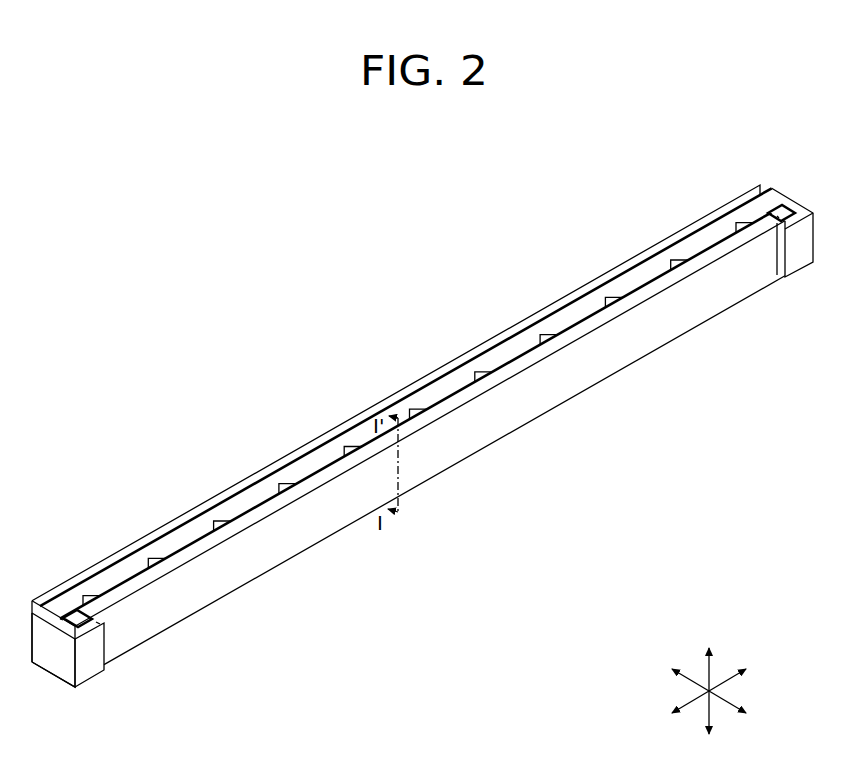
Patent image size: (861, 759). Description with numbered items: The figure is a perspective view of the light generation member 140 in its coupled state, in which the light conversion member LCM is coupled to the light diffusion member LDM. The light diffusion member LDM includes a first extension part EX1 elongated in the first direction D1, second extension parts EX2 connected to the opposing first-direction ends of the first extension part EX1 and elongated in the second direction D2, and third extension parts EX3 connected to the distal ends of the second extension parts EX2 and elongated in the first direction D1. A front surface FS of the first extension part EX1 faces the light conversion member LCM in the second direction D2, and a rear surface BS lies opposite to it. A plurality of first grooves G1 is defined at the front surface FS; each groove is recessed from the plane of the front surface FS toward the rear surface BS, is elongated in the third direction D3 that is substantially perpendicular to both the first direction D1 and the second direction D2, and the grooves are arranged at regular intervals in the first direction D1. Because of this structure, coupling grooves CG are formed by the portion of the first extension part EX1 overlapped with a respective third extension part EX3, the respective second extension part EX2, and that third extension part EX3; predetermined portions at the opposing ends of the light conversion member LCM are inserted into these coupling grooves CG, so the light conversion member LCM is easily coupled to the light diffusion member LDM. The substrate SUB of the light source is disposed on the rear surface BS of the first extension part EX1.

The light generation member 140 is at (330, 341).
The substrate SUB is at (317, 440).
The rear surface BS is at (614, 275).
The front surface FS is at (511, 359).
The first grooves G1 is at (425, 408).
The first extension part EX1 is at (563, 318).
The second extension parts EX2 is at (63, 610).
The third extension parts EX3 is at (97, 623).
The coupling grooves CG is at (67, 619).
The light conversion member LCM is at (498, 412).
The light diffusion member LDM is at (57, 653).
The first direction D1 is at (726, 679).
The second direction D2 is at (726, 703).
The third direction D3 is at (708, 674).